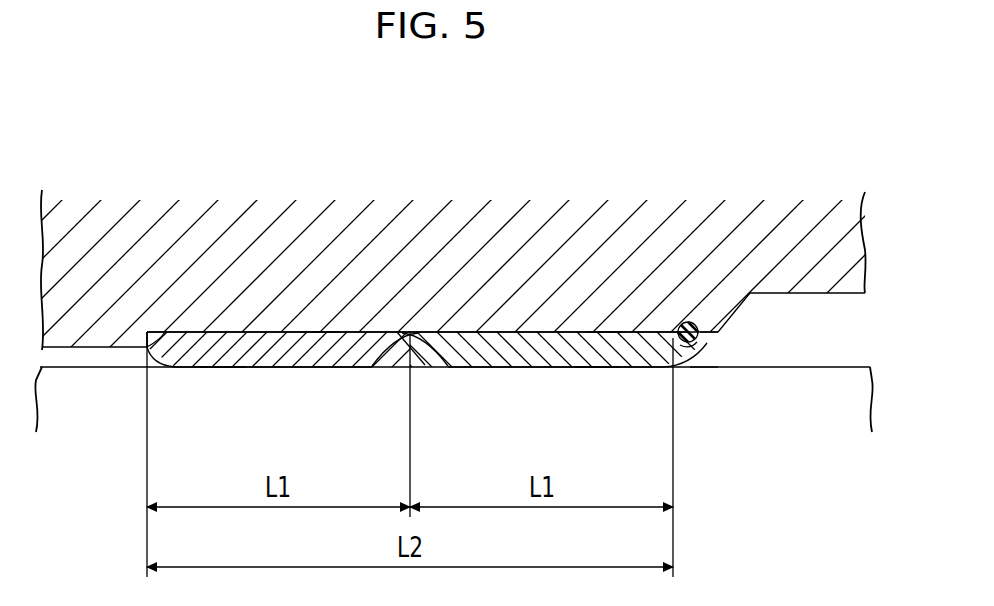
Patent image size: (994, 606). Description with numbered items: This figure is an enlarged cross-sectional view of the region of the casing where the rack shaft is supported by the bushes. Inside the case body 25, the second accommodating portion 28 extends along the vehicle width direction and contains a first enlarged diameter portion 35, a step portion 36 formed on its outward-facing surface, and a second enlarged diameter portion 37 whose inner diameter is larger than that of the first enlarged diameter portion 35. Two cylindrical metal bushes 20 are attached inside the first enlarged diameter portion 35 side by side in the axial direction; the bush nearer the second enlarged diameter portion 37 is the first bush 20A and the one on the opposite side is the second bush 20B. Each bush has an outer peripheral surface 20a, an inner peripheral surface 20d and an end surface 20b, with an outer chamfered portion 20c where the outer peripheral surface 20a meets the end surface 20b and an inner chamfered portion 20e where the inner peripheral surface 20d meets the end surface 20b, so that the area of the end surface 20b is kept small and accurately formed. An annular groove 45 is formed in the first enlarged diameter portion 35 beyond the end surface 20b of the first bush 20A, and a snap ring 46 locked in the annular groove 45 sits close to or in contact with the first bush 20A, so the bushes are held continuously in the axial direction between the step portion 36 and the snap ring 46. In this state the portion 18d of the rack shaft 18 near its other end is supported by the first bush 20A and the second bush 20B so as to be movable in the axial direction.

The rack shaft 18 is at (88, 388).
The portion of the rack shaft near the other end portion 18d is at (428, 369).
The bush 20 is at (432, 225).
The first bush 20A is at (556, 322).
The second bush 20B is at (284, 322).
The outer peripheral surface 20a is at (320, 331).
The end surface 20b is at (140, 349).
The outer chamfered portion 20c is at (148, 331).
The inner peripheral surface 20d is at (220, 369).
The inner chamfered portion 20e is at (150, 372).
The case body 25 is at (871, 234).
The second accommodating portion 28 is at (52, 350).
The first enlarged diameter portion 35 is at (503, 348).
The step portion 36 is at (218, 331).
The second enlarged diameter portion 37 is at (800, 296).
The annular groove 45 is at (705, 347).
The snap ring 46 is at (695, 354).